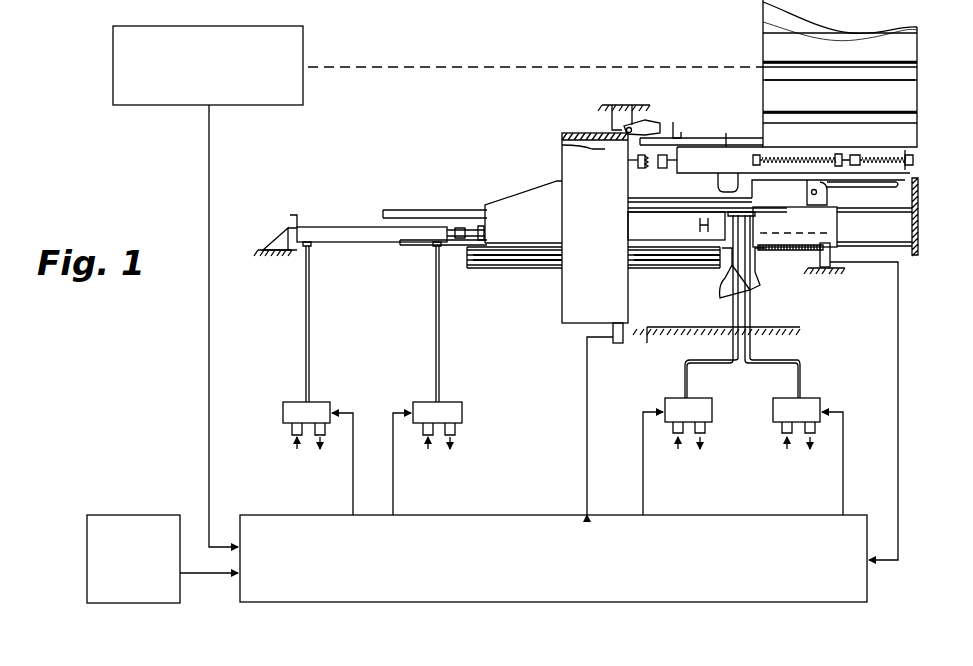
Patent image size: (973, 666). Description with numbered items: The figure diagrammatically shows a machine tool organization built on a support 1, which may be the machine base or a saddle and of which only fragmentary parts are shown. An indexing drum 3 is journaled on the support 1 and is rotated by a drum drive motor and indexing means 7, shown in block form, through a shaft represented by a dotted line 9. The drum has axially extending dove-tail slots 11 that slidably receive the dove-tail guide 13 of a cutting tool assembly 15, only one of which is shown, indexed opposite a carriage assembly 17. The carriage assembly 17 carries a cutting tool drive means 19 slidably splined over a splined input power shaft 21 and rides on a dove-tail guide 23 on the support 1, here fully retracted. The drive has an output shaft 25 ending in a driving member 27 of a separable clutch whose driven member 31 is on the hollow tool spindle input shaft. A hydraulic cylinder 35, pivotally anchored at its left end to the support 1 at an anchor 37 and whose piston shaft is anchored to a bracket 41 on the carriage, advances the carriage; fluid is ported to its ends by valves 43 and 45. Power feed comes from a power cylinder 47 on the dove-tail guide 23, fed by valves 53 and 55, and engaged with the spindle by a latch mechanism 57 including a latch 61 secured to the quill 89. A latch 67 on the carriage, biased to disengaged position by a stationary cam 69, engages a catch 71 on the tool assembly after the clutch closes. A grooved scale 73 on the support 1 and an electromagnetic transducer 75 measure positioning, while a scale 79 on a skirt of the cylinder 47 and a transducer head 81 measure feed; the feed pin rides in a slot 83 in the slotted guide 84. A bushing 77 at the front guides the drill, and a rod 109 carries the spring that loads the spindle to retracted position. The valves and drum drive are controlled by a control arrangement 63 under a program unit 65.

The support 1 is at (268, 252).
The indexing drum 3 is at (917, 46).
The drum drive motor and indexing means 7 is at (298, 105).
The shaft 9 is at (429, 69).
The dove-tail slots 11 is at (914, 77).
The dove-tail guide 13 is at (690, 137).
The cutting tool assembly 15 is at (750, 139).
The carriage assembly 17 is at (561, 153).
The cutting tool drive means 19 is at (590, 134).
The splined input power shaft 21 is at (512, 265).
The dove-tail guide 23 is at (441, 211).
The output shaft 25 is at (636, 163).
The driving member 27 is at (644, 167).
The driven member 31 is at (664, 170).
The hydraulic cylinder 35 is at (345, 221).
The support 37 is at (284, 235).
The bracket 41 is at (507, 205).
The valve 43 is at (315, 407).
The valve 45 is at (450, 407).
The power cylinder 47 is at (837, 223).
The valve 53 is at (700, 404).
The valve 55 is at (808, 404).
The latch mechanism 57 is at (807, 192).
The latch 61 is at (716, 183).
The control arrangement 63 is at (752, 602).
The program unit 65 is at (176, 600).
The latch 67 is at (650, 123).
The stationary cam 69 is at (614, 113).
The catch 71 is at (676, 122).
The grooved scale 73 is at (662, 330).
The electromagnetic transducer 75 is at (620, 343).
The bushing 77 is at (913, 158).
The scale 79 is at (770, 258).
The transducer head 81 is at (832, 268).
The slot 83 is at (898, 180).
The slotted guide 84 is at (918, 190).
The quill 89 is at (726, 146).
The rod 109 is at (790, 155).